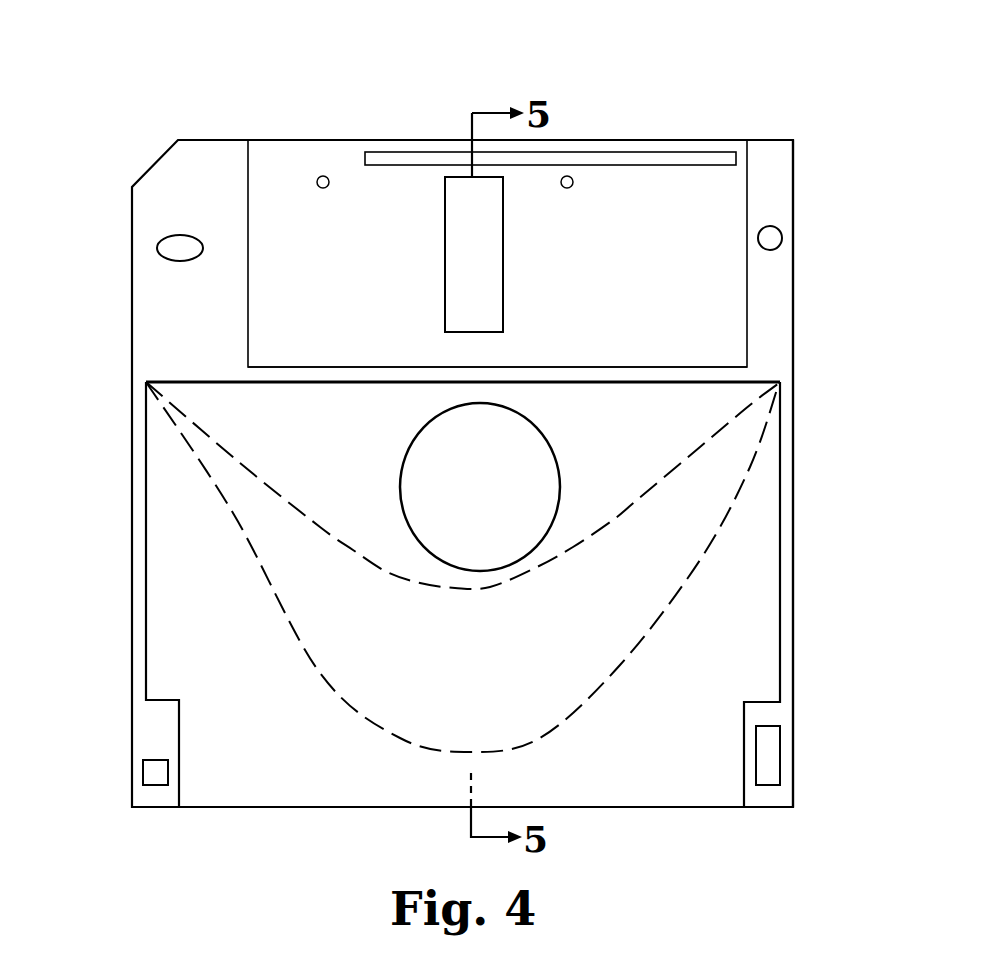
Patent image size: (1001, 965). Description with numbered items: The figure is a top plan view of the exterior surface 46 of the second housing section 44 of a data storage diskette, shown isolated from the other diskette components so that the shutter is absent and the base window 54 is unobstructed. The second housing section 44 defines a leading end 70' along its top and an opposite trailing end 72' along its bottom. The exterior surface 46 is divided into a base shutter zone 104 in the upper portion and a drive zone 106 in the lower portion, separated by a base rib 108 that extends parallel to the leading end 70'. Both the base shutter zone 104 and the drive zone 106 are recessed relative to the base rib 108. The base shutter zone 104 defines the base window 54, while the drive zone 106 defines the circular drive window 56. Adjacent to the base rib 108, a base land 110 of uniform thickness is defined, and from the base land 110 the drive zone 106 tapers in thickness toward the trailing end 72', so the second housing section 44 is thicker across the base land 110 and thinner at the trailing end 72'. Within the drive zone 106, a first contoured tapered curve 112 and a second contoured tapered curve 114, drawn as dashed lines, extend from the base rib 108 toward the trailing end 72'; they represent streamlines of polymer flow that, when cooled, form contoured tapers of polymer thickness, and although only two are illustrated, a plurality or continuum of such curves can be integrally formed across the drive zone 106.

The second housing section 44 is at (113, 92).
The leading end 70' is at (324, 104).
The base shutter zone 104 is at (283, 210).
The base window 54 is at (445, 223).
The exterior surface 46 is at (760, 190).
The base rib 108 is at (335, 376).
The base land 110 is at (292, 384).
The drive zone 106 is at (727, 633).
The drive window 56 is at (399, 488).
The first contoured tapered curve 112 is at (568, 552).
The second contoured tapered curve 114 is at (590, 707).
The trailing end 72' is at (462, 851).